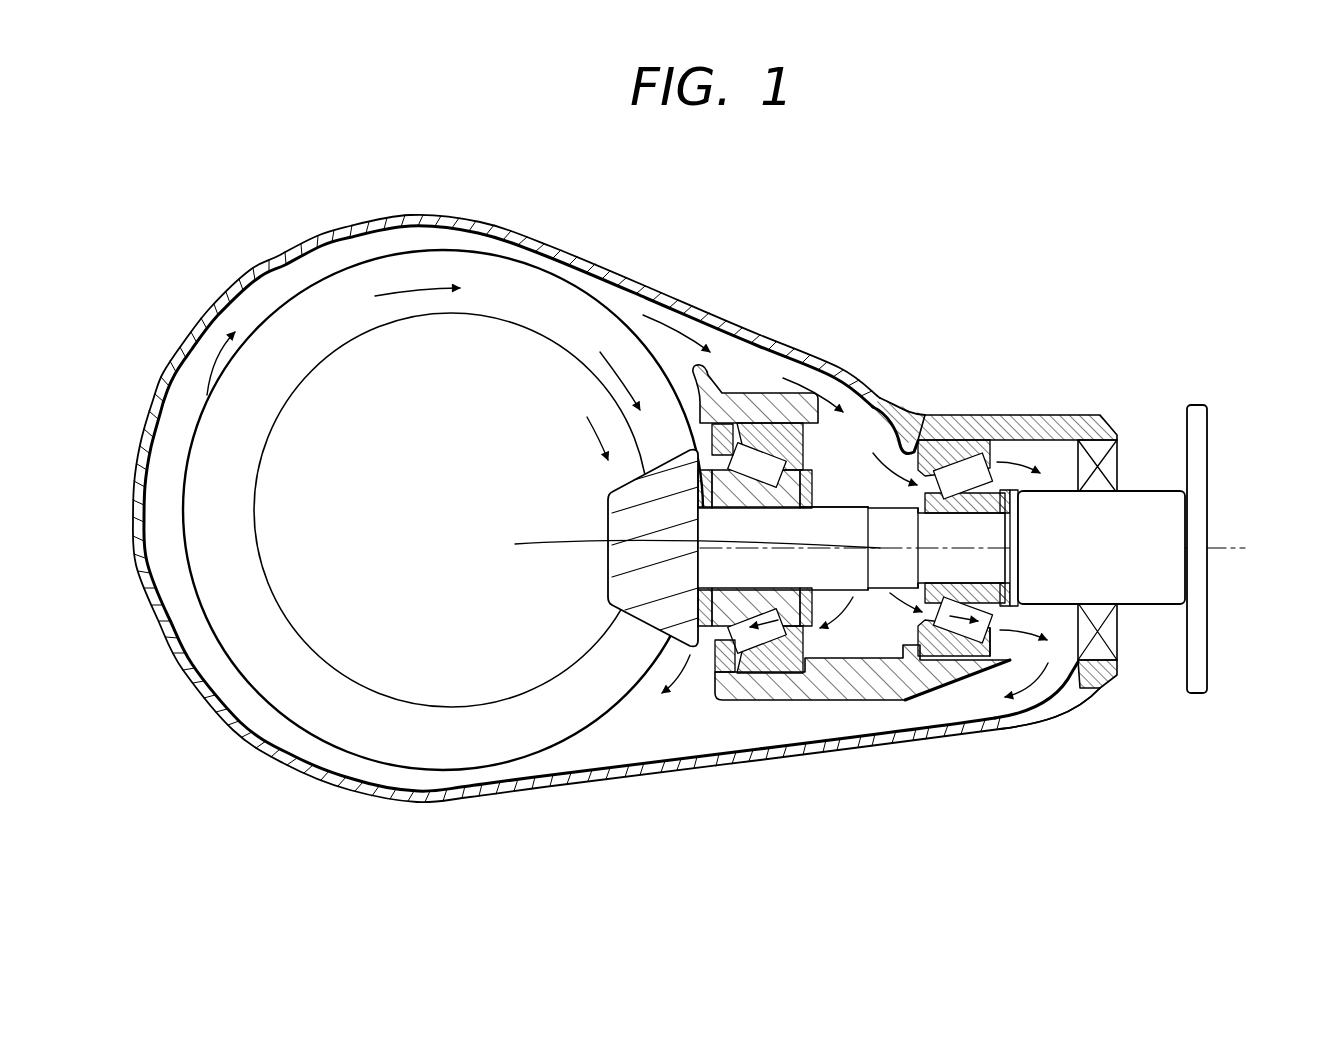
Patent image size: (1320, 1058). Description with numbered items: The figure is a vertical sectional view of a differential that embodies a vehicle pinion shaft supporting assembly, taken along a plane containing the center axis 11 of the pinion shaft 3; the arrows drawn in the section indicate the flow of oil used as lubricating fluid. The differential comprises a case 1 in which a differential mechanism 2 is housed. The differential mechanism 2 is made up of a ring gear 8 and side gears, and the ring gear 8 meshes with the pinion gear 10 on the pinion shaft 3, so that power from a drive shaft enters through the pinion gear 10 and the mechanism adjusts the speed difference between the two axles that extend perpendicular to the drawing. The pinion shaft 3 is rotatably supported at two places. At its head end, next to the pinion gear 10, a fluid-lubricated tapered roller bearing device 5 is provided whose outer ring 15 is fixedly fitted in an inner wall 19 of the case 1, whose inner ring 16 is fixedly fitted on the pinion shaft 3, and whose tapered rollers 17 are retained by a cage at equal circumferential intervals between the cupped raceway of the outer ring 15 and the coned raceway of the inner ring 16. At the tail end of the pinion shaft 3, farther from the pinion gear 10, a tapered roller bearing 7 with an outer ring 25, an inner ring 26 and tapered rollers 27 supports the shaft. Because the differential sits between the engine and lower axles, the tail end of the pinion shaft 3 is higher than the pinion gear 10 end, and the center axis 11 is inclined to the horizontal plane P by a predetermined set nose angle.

The case 1 is at (872, 385).
The differential mechanism 2 is at (322, 280).
The pinion shaft 3 is at (1133, 518).
The tapered roller bearing device 5 is at (753, 418).
The tapered roller bearing 7 is at (962, 422).
The ring gear 8 is at (497, 286).
The pinion gear 10 is at (675, 505).
The center axis 11 is at (1163, 545).
The outer ring 15 is at (787, 647).
The inner ring 16 is at (712, 622).
The tapered rollers 17 is at (728, 655).
The inner wall 19 is at (848, 690).
The outer ring 25 is at (978, 648).
The inner ring 26 is at (1055, 665).
The tapered rollers 27 is at (940, 657).
The horizontal plane P is at (800, 525).